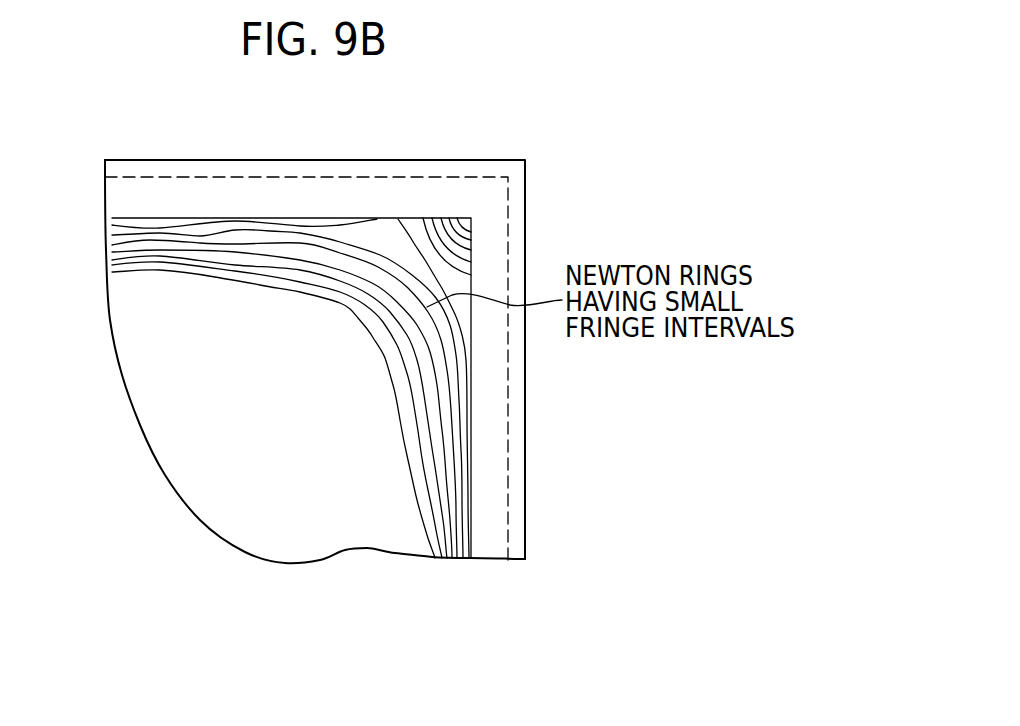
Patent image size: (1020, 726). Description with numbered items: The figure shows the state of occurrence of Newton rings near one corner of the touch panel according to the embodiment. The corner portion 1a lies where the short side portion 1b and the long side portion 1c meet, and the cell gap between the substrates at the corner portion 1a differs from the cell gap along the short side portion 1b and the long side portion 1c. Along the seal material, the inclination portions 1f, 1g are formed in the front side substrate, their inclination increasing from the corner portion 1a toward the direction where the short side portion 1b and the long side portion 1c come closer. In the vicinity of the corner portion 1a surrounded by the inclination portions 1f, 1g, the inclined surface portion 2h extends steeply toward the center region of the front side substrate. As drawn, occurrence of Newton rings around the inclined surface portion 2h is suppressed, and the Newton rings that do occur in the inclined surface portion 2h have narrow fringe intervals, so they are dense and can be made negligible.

The corner portion 1a is at (483, 203).
The short side portion 1b is at (253, 198).
The long side portion 1c is at (490, 425).
The inclination portion 1f is at (398, 198).
The inclination portion 1g is at (490, 240).
The inclined surface portion 2h is at (388, 287).